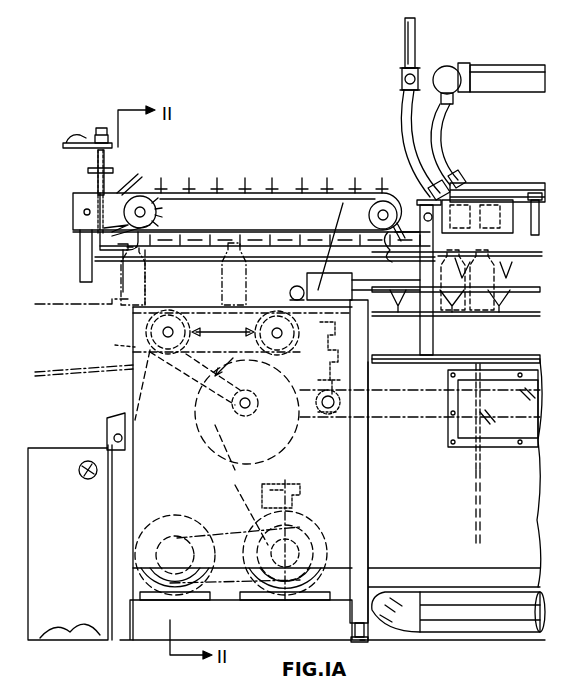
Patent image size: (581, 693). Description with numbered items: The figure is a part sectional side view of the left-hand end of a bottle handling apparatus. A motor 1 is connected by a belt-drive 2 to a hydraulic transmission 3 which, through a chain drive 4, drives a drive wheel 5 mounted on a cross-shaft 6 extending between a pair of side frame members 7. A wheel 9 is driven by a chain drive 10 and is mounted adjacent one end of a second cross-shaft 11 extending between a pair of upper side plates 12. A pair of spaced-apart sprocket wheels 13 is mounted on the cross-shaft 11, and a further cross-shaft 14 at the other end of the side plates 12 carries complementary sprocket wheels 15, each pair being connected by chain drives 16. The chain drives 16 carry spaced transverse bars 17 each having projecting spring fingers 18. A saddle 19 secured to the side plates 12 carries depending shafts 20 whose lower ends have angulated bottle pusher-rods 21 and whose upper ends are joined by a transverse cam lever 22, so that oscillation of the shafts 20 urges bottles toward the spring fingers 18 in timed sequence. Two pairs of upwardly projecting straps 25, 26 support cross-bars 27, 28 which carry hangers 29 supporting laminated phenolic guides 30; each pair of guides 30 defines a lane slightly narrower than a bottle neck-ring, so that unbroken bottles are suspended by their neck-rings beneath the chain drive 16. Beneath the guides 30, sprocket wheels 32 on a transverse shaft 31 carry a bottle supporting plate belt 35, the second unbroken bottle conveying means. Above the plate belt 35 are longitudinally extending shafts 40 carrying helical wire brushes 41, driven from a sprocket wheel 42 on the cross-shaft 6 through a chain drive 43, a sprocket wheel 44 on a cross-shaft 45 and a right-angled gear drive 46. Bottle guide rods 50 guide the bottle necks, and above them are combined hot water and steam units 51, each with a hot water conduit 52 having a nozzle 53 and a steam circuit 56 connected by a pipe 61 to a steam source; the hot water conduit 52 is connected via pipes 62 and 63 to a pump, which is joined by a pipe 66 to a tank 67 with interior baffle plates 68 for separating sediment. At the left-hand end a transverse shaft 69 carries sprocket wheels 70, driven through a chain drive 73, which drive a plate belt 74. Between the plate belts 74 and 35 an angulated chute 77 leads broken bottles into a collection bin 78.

The motor 1 is at (165, 503).
The belt-drive 2 is at (232, 537).
The hydraulic transmission 3 is at (324, 530).
The chain drive 4 is at (224, 468).
The drive wheel 5 is at (260, 455).
The cross-shaft 6 is at (240, 406).
The side frame members 7 is at (133, 395).
The wheel 9 is at (363, 170).
The chain drive 10 is at (365, 308).
The second cross-shaft 11 is at (377, 216).
The upper side plates 12 is at (73, 214).
The sprocket wheels 13 is at (388, 205).
The further cross-shaft 14 is at (152, 210).
The sprocket wheels 15 is at (152, 216).
The chain drives 16 is at (287, 192).
The transverse bars 17 is at (240, 190).
The spring fingers 18 is at (189, 188).
The saddle 19 is at (94, 178).
The depending shafts 20 is at (126, 180).
The bottle pusher-rod 21 is at (133, 276).
The transverse cam lever 22 is at (87, 132).
The straps 25 is at (80, 272).
The straps 26 is at (433, 330).
The cross-bar 27 is at (84, 210).
The cross-bar 28 is at (432, 217).
The hangers 29 is at (114, 252).
The laminated phenolic guides 30 is at (162, 250).
The transverse shaft 31 is at (272, 337).
The sprocket wheels 32 is at (270, 300).
The bottle supporting plate belt 35 is at (485, 355).
The longitudinally extending shafts 40 is at (497, 286).
The helical wire brush 41 is at (512, 302).
The sprocket wheel 42 is at (195, 378).
The chain drive 43 is at (326, 410).
The sprocket wheel 44 is at (340, 403).
The cross-shaft 45 is at (330, 412).
The right-angled gear drive 46 is at (334, 380).
The bottle guide rods 50 is at (542, 256).
The combined hot water and steam units 51 is at (532, 181).
The hot water conduit 52 is at (492, 190).
The nozzle 53 is at (540, 232).
The steam circuit 56 is at (455, 176).
The pipe 61 is at (405, 48).
The pipe 62 is at (440, 130).
The pipe 63 is at (513, 86).
The pipe 66 is at (455, 613).
The tank 67 is at (405, 504).
The baffle plates 68 is at (483, 486).
The transverse shaft 69 is at (170, 338).
The sprocket wheels 70 is at (85, 356).
The chain drive 73 is at (178, 306).
The plate belt 74 is at (113, 311).
The angulated chute 77 is at (107, 445).
The collection bin 78 is at (48, 464).